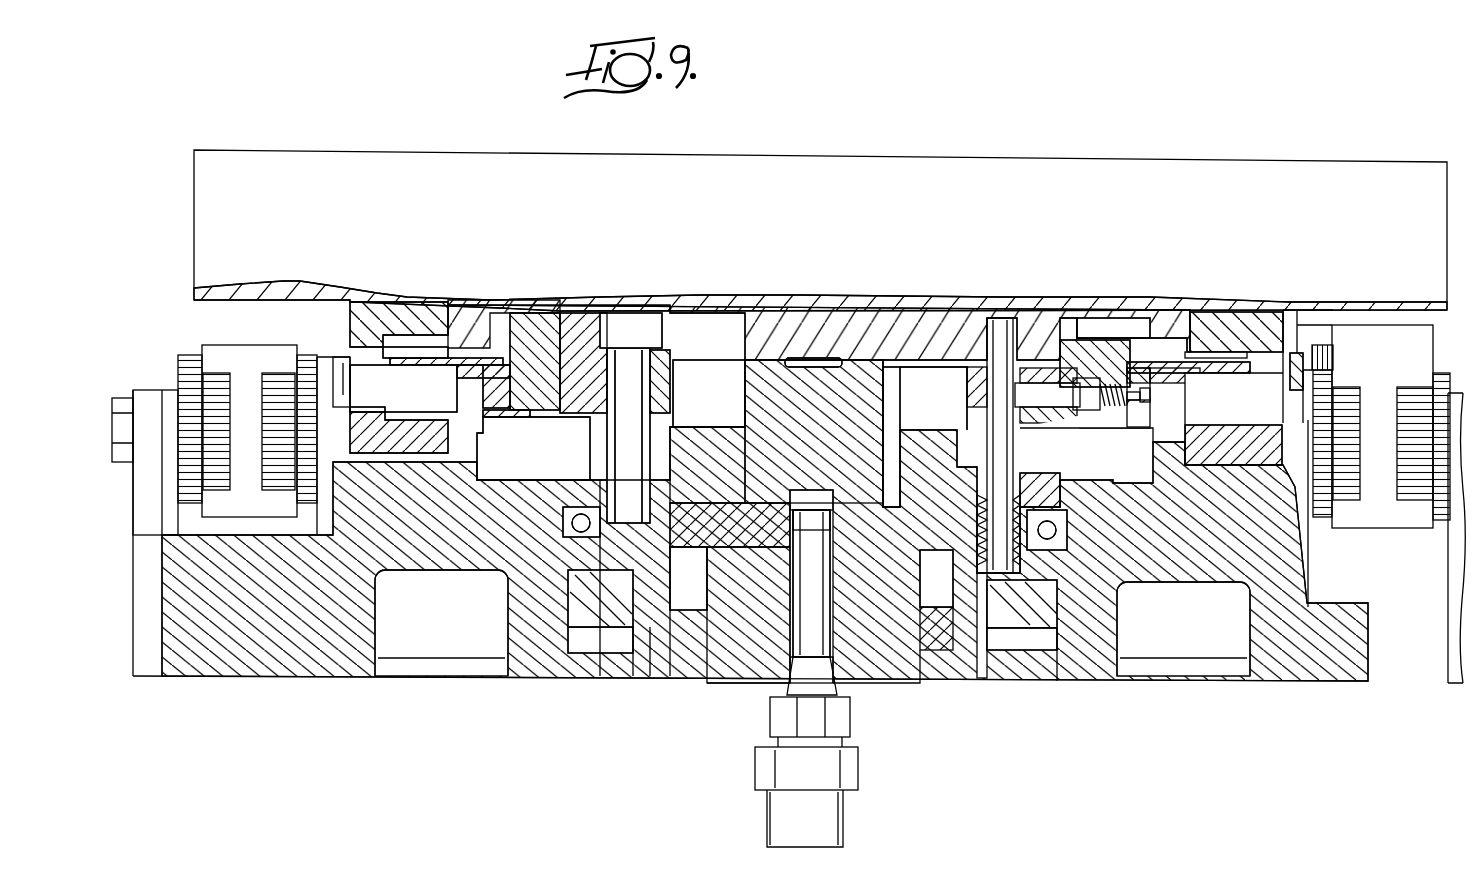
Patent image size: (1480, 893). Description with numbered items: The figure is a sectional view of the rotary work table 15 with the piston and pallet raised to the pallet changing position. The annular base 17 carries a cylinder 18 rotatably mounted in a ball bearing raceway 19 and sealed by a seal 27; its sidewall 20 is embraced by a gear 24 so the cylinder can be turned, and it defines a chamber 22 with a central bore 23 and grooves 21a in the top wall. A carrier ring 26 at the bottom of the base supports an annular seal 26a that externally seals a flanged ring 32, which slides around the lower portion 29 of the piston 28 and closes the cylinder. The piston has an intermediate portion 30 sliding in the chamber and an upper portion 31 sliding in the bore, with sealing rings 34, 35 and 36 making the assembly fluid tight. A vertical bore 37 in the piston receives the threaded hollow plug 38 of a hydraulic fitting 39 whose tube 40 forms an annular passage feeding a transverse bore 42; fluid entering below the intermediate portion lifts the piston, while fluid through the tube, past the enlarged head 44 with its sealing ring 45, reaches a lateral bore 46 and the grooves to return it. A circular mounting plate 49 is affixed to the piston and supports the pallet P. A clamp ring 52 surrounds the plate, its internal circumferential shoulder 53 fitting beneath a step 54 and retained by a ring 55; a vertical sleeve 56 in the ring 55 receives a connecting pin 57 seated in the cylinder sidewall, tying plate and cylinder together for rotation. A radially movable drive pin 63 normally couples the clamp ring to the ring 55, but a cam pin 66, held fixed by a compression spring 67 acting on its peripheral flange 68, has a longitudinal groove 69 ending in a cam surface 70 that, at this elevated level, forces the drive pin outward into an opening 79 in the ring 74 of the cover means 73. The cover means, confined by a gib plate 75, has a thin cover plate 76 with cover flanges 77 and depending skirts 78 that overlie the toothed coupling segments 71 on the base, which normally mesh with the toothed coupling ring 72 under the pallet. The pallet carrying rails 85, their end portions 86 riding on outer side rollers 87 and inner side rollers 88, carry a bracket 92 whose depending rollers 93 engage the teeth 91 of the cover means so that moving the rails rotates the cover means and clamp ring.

The pallet P is at (322, 146).
The work table 15 is at (207, 684).
The base 17 is at (520, 678).
The cylinder 18 is at (556, 605).
The ball bearing raceway 19 is at (563, 528).
The sidewall 20 is at (640, 552).
The grooves 21a is at (707, 465).
The chamber 22 is at (688, 578).
The central bore 23 is at (740, 450).
The gear 24 is at (1035, 598).
The carrier ring 26 is at (1035, 683).
The annular seal 26a is at (620, 680).
The seal 27 is at (1072, 483).
The piston 28 is at (720, 686).
The lower portion 29 is at (880, 682).
The intermediate portion 30 is at (940, 552).
The upper portion 31 is at (690, 488).
The flanged ring 32 is at (670, 680).
The sealing ring 34 is at (935, 681).
The sealing ring 35 is at (678, 521).
The sealing ring 36 is at (740, 462).
The vertical bore 37 is at (826, 612).
The threaded hollow plug 38 is at (790, 690).
The hydraulic fitting 39 is at (872, 768).
The tube 40 is at (822, 582).
The transverse bore 42 is at (735, 562).
The enlarged head 44 is at (838, 535).
The sealing ring 45 is at (835, 522).
The lateral bore 46 is at (768, 500).
The mounting plate 49 is at (922, 320).
The clamp ring 52 is at (548, 318).
The internal circumferential shoulder 53 is at (1070, 350).
The step 54 is at (1085, 320).
The ring 55 is at (586, 420).
The vertical sleeve 56 is at (585, 348).
The connecting pin 57 is at (615, 458).
The drive pin 63 is at (1118, 415).
The cam pin 66 is at (1002, 380).
The compression spring 67 is at (970, 498).
The peripheral flange 68 is at (1022, 615).
The longitudinal groove 69 is at (1012, 450).
The cam surface 70 is at (985, 407).
The toothed coupling segments 71 is at (440, 408).
The toothed coupling ring 72 is at (360, 343).
The cover means 73 is at (425, 370).
The ring 74 is at (472, 412).
The gib plate 75 is at (512, 430).
The cover plate 76 is at (1215, 380).
The cover flanges 77 is at (340, 350).
The depending skirts 78 is at (340, 410).
The opening 79 is at (1150, 395).
The pallet carrying rails 85 is at (215, 355).
The rail end portion 86 is at (222, 356).
The outer side rollers 87 is at (183, 388).
The inner side rollers 88 is at (283, 490).
The teeth 91 is at (1335, 355).
The bracket 92 is at (1302, 330).
The rollers 93 is at (1318, 348).